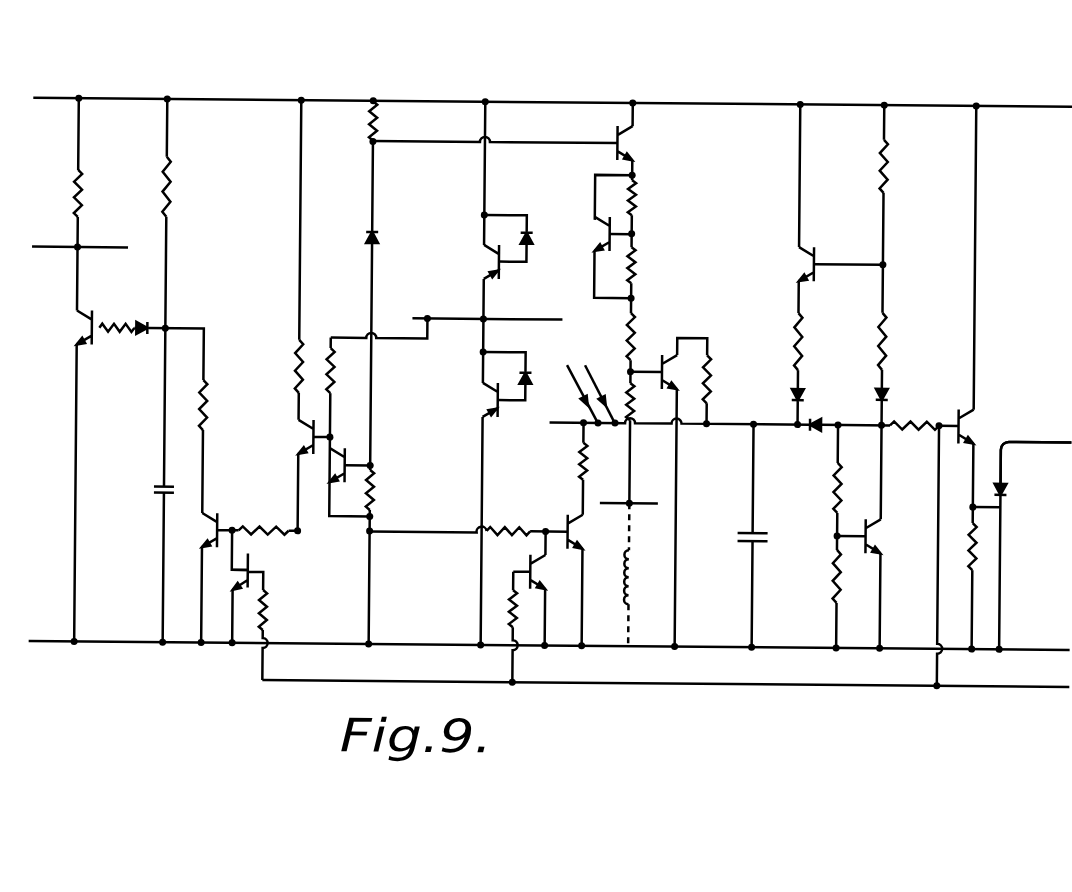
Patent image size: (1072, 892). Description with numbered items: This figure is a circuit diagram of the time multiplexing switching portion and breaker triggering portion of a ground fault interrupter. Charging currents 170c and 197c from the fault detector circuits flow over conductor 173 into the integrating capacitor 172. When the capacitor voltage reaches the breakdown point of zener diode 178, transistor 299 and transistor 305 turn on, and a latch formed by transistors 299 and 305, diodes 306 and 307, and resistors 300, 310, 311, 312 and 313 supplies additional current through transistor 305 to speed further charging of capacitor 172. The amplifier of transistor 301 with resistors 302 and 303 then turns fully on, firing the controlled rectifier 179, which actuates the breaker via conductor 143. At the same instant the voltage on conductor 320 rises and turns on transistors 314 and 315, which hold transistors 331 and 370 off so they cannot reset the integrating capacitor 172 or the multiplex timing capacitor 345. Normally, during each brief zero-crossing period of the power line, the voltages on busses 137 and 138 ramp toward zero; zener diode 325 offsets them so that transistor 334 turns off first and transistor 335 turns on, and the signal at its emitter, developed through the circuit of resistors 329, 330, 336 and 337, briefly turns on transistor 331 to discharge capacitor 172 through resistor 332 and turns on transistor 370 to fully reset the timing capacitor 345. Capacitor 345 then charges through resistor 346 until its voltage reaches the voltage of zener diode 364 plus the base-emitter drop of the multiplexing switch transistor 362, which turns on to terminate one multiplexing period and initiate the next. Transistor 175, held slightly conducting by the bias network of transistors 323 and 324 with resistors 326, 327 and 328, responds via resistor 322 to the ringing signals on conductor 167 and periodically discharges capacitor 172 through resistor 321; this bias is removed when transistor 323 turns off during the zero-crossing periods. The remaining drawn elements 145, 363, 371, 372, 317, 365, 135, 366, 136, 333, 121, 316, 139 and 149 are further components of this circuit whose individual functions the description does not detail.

The conductor 143 is at (83, 196).
The resistor 346 is at (170, 193).
The conductor 145 is at (96, 251).
The multiplexing switch transistor 362 is at (91, 315).
The resistor 363 is at (116, 337).
The zener diode 364 is at (139, 341).
The resistor 371 is at (208, 408).
The multiplex timing capacitor 345 is at (137, 489).
The transistor 370 is at (192, 530).
The resistor 372 is at (281, 514).
The transistor 315 is at (233, 572).
The resistor 317 is at (270, 602).
The resistor 336 is at (296, 372).
The resistor 337 is at (345, 374).
The transistor 335 is at (312, 439).
The transistor 334 is at (345, 480).
The resistor 330 is at (375, 490).
The resistor 329 is at (375, 126).
The zener diode 325 is at (377, 244).
The transistor 365 is at (496, 263).
The diode 135 is at (529, 246).
The buss 138 is at (495, 320).
The buss 137 is at (504, 133).
The transistor 324 is at (606, 228).
The resistor 326 is at (635, 198).
The transistor 323 is at (619, 132).
The resistor 327 is at (635, 268).
The resistor 328 is at (635, 339).
The transistor 366 is at (496, 401).
The diode 136 is at (529, 384).
The charging current 197c is at (566, 366).
The charging current 170c is at (600, 362).
The conductor 173 is at (548, 425).
The resistor 332 is at (584, 460).
The resistor 333 is at (512, 523).
The transistor 331 is at (572, 530).
The conductor 167 is at (624, 500).
The winding 121 is at (651, 588).
The transistor 314 is at (535, 576).
The resistor 316 is at (507, 608).
The conductor 139 is at (472, 645).
The resistor 322 is at (654, 403).
The transistor 175 is at (664, 377).
The resistor 321 is at (711, 379).
The transistor 305 is at (811, 262).
The resistor 312 is at (802, 328).
The diode 307 is at (805, 392).
The resistor 311 is at (886, 171).
The resistor 310 is at (886, 339).
The diode 306 is at (889, 391).
The resistor 302 is at (940, 407).
The transistor 301 is at (962, 420).
The conductor 149 is at (1020, 438).
The zener diode 178 is at (812, 437).
The integrating capacitor 172 is at (770, 538).
The resistor 313 is at (842, 487).
The transistor 299 is at (870, 537).
The resistor 300 is at (842, 572).
The resistor 303 is at (970, 556).
The controlled rectifier 179 is at (1007, 486).
The conductor 320 is at (935, 652).